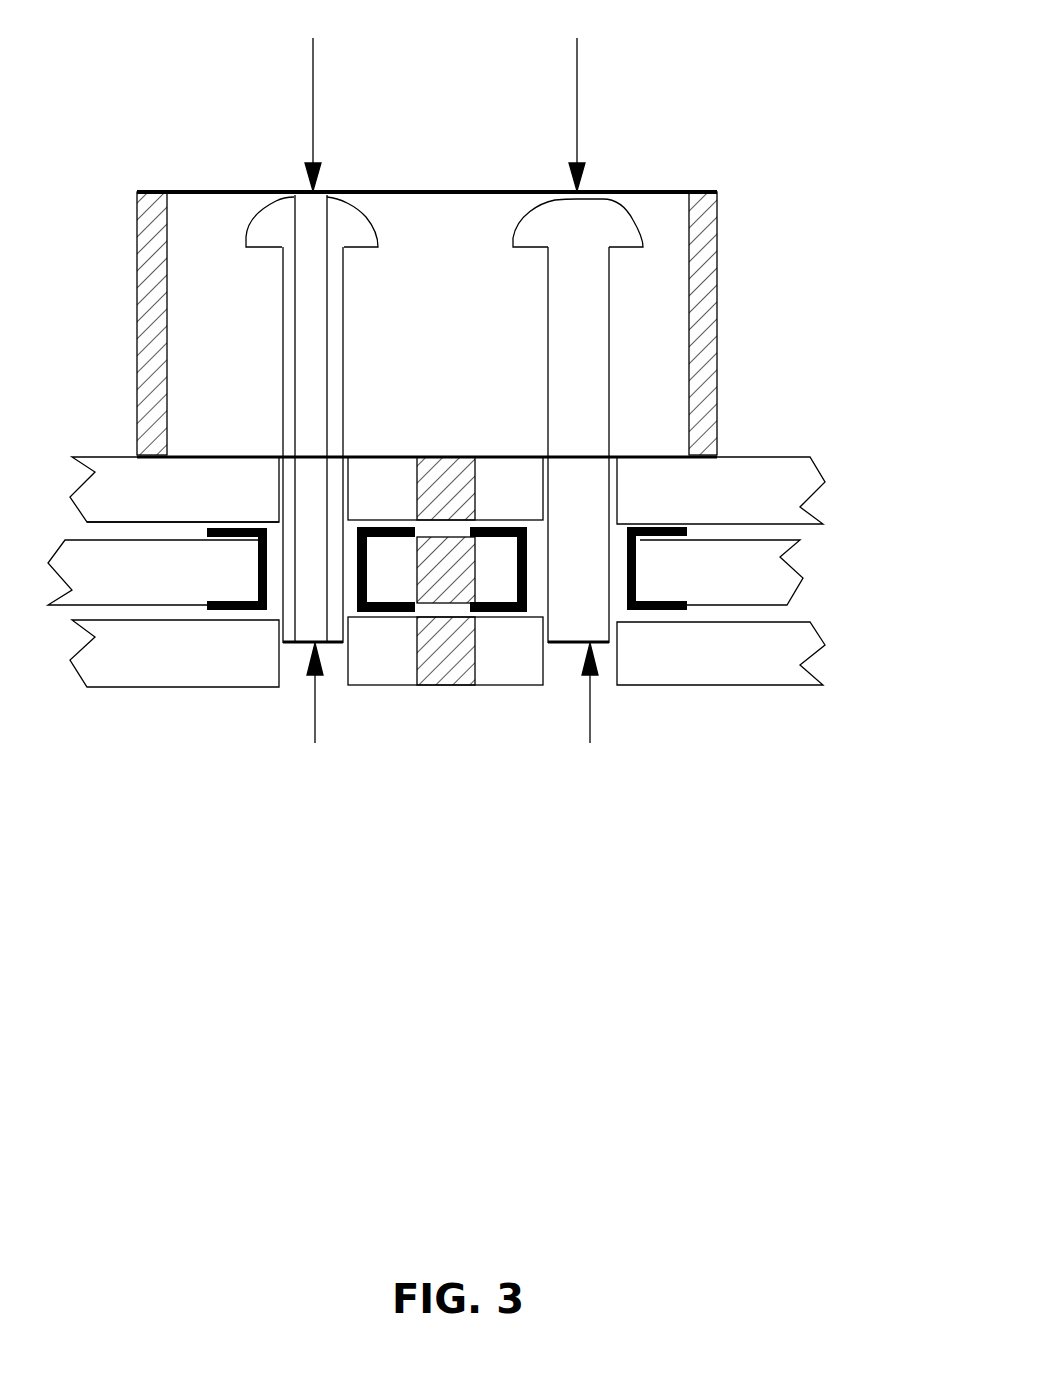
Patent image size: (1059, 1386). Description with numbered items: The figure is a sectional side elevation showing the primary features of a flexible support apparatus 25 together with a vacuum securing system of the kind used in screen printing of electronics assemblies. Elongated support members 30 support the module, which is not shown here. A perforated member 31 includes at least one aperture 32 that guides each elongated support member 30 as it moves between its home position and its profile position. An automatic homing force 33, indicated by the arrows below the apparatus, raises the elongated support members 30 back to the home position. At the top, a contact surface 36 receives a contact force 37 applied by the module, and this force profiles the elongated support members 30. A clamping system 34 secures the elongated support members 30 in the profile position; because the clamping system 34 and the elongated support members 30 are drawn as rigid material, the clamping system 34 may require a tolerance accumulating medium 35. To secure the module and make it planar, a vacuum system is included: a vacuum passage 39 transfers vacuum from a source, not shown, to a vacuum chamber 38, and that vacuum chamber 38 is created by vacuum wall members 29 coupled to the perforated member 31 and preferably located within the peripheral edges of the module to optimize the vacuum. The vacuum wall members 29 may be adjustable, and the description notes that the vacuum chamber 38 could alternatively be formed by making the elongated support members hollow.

The flexible support apparatus 25 is at (212, 717).
The vacuum wall members 29 is at (706, 345).
The elongated support member 30 is at (290, 542).
The perforated member 31 is at (715, 478).
The aperture 32 is at (277, 453).
The automatic homing force 33 is at (590, 704).
The clamping system 34 is at (758, 580).
The tolerance accumulating medium 35 is at (232, 528).
The contact surface 36 is at (612, 192).
The contact force 37 is at (313, 108).
The vacuum chamber 38 is at (310, 373).
The vacuum passage 39 is at (460, 485).